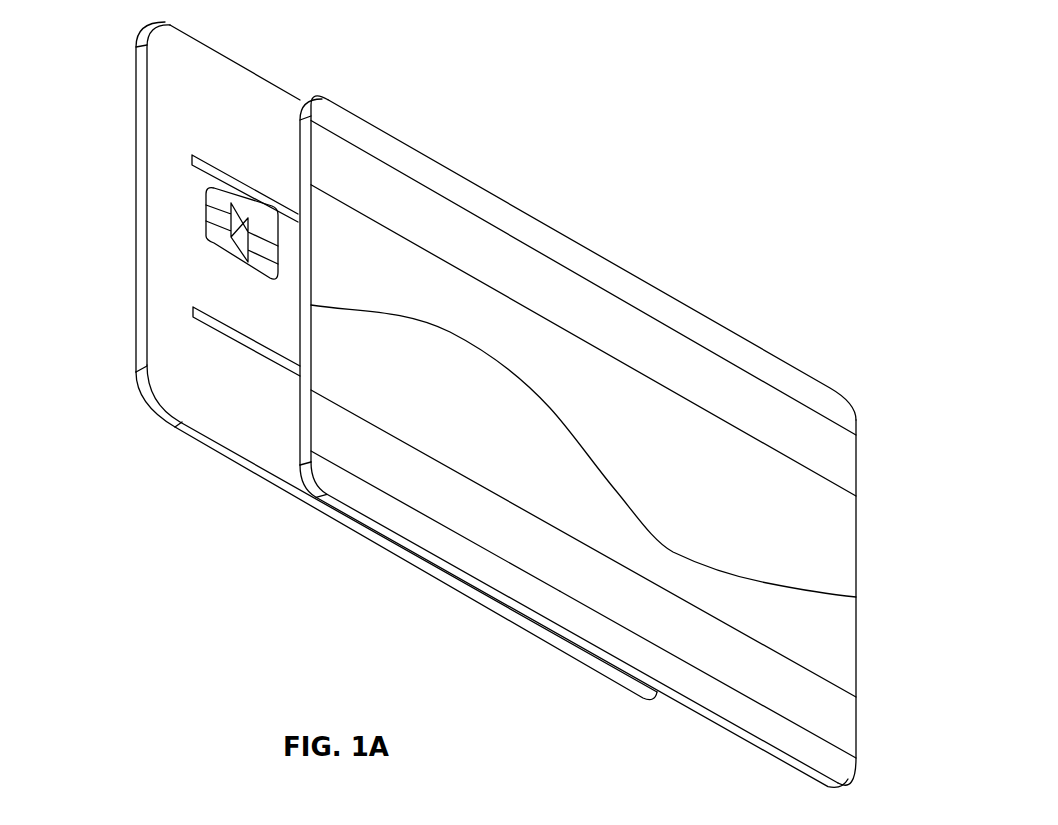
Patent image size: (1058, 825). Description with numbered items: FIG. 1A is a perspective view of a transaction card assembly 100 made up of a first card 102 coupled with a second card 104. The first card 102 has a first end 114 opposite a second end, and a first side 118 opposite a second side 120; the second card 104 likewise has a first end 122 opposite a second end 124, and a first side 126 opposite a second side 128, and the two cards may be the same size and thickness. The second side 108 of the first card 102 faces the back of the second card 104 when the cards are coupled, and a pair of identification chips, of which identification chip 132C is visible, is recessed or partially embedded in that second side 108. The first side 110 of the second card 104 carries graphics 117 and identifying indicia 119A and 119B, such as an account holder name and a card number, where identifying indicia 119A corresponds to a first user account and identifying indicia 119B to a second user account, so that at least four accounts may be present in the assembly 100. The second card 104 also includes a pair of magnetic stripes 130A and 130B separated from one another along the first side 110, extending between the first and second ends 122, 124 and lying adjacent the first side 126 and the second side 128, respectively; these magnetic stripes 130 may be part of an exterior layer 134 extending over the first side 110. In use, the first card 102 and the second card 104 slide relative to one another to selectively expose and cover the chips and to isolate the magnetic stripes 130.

The assembly 100 is at (812, 85).
The first card 102 is at (160, 262).
The second card 104 is at (590, 280).
The second side of the first card 108 is at (167, 180).
The first side of the second card 110 is at (848, 628).
The first end of the first card 114 is at (135, 118).
The graphics 117 is at (490, 362).
The first side of the first card 118 is at (249, 70).
The identifying indicia 119A is at (545, 510).
The identifying indicia 119B is at (822, 515).
The second side of the first card 120 is at (252, 474).
The first end of the second card 122 is at (350, 108).
The second end of the second card 124 is at (858, 673).
The first side of the second card 126 is at (497, 195).
The second side of the second card 128 is at (727, 733).
The magnetic stripes 130 is at (846, 731).
The magnetic stripe 130A is at (743, 385).
The magnetic stripe 130B is at (437, 505).
The identification chip 132C is at (216, 246).
The exterior layer 134 is at (430, 168).